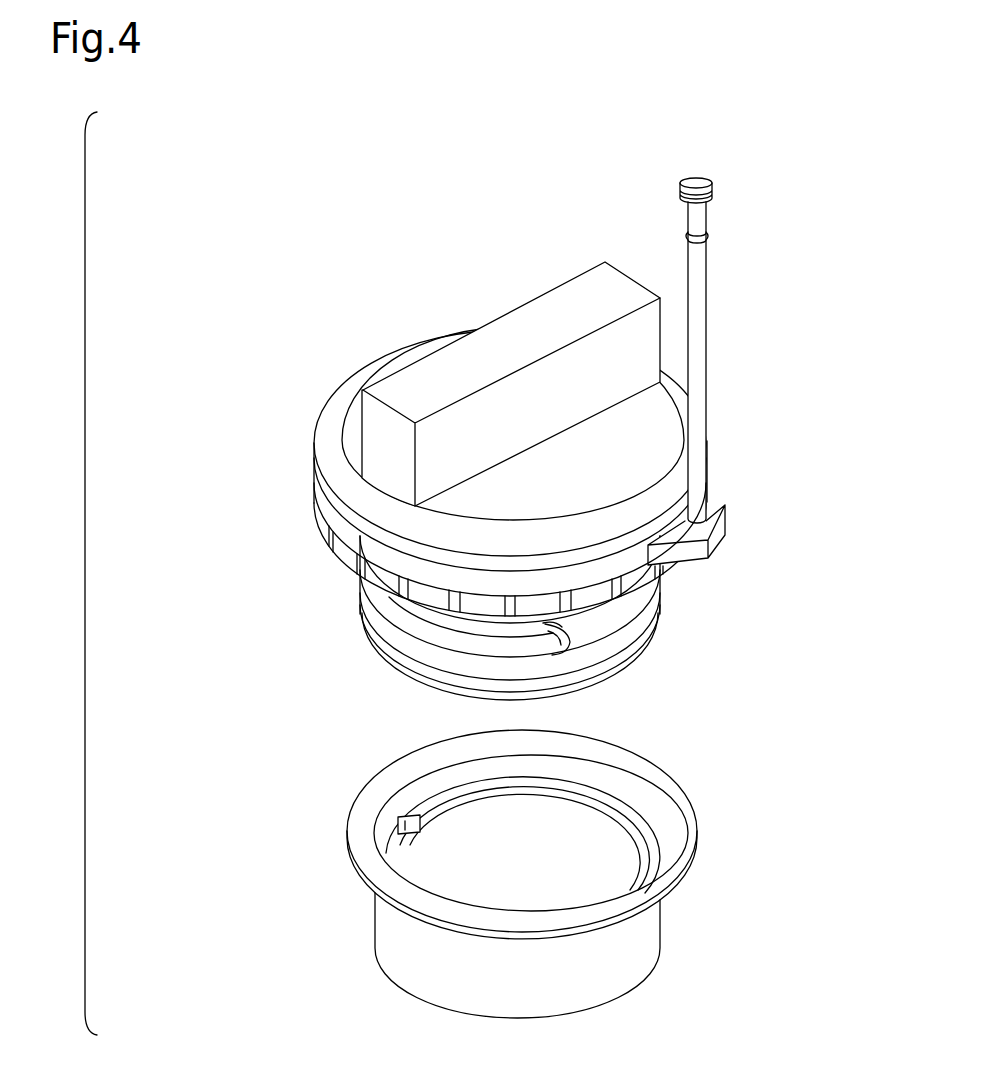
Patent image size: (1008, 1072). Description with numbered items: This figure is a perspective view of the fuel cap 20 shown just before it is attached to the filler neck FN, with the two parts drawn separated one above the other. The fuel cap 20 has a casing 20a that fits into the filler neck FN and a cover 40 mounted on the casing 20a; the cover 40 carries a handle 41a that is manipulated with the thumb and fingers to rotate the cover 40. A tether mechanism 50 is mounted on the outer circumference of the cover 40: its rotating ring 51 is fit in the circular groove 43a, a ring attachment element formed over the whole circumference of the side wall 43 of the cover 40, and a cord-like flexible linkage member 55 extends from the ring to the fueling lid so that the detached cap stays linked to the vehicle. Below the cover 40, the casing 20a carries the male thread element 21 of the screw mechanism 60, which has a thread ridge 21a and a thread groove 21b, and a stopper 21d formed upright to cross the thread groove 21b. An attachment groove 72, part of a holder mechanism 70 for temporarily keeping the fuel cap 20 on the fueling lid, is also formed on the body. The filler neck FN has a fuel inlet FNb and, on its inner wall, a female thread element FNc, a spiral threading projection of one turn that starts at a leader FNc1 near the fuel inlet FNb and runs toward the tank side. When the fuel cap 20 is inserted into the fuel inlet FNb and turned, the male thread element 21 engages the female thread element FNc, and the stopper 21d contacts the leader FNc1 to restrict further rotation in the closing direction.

The fuel cap 20 is at (596, 139).
The casing 20a is at (627, 560).
The cover 40 is at (462, 418).
The handle 41a is at (537, 312).
The side wall 43 is at (312, 440).
The circular groove 43a is at (332, 500).
The tether mechanism 50 is at (763, 371).
The rotating ring 51 is at (710, 558).
The flexible linkage member 55 is at (693, 458).
The screw mechanism 60 is at (414, 688).
The male thread element 21 is at (444, 602).
The thread ridge 21a is at (540, 638).
The thread groove 21b is at (395, 620).
The stopper 21d is at (550, 625).
The holder mechanism 70 is at (564, 646).
The attachment groove 72 is at (640, 632).
The filler neck FN is at (546, 874).
The fuel inlet FNb is at (620, 802).
The female thread element FNc is at (421, 831).
The leader FNc1 is at (335, 848).